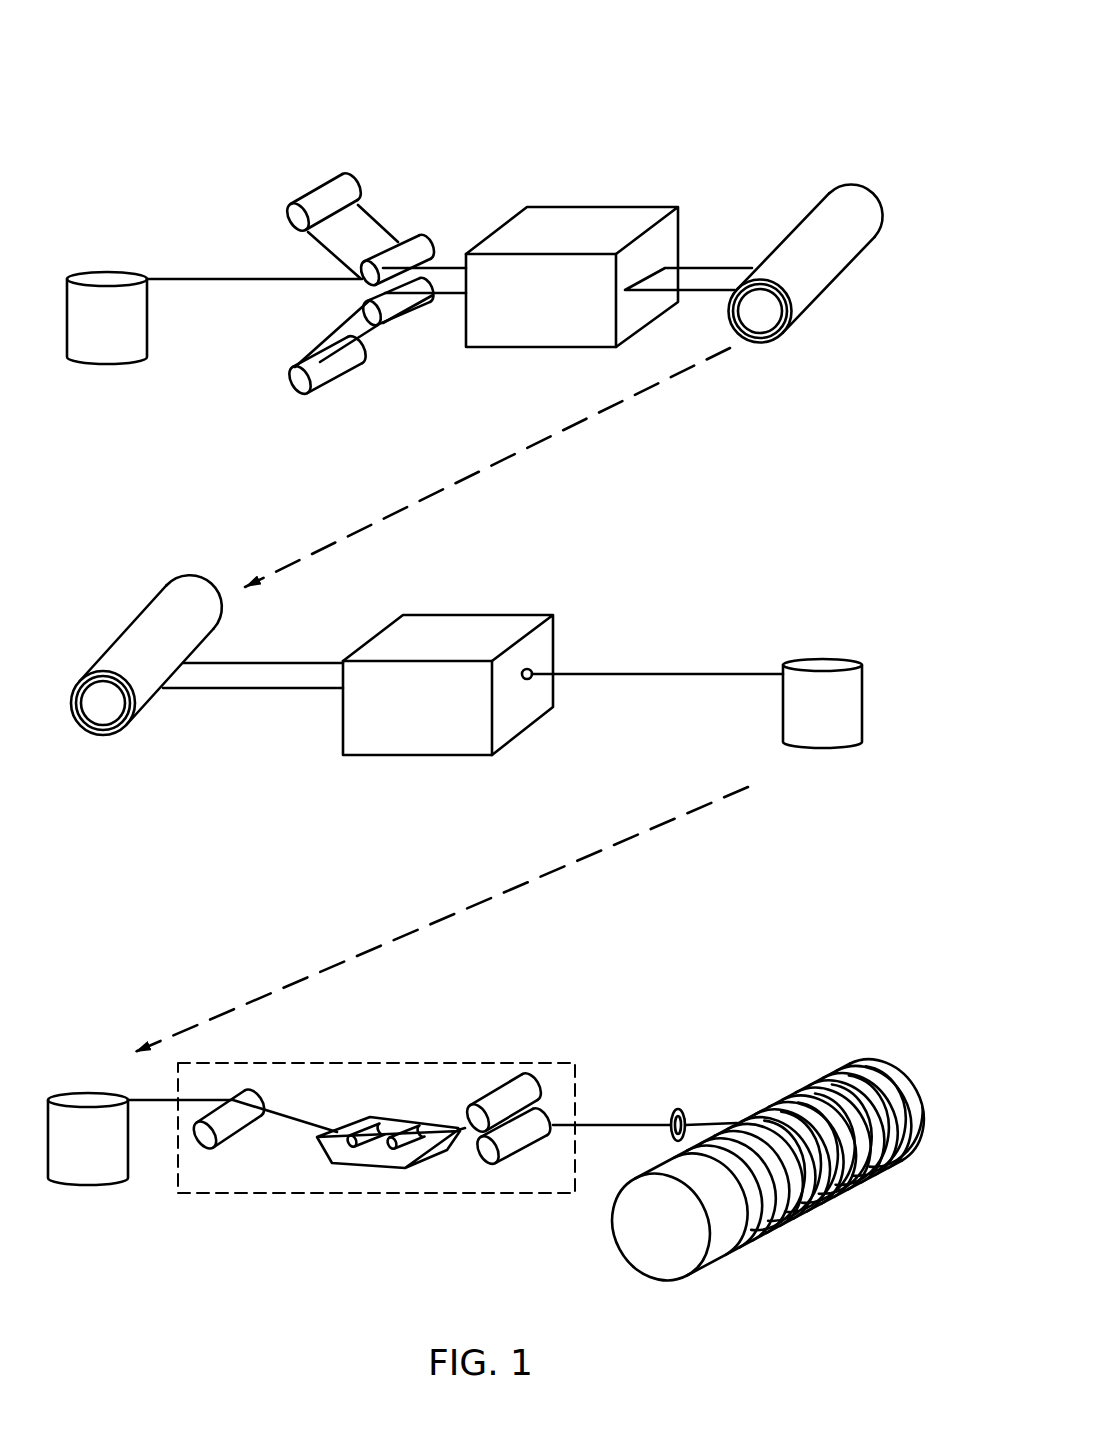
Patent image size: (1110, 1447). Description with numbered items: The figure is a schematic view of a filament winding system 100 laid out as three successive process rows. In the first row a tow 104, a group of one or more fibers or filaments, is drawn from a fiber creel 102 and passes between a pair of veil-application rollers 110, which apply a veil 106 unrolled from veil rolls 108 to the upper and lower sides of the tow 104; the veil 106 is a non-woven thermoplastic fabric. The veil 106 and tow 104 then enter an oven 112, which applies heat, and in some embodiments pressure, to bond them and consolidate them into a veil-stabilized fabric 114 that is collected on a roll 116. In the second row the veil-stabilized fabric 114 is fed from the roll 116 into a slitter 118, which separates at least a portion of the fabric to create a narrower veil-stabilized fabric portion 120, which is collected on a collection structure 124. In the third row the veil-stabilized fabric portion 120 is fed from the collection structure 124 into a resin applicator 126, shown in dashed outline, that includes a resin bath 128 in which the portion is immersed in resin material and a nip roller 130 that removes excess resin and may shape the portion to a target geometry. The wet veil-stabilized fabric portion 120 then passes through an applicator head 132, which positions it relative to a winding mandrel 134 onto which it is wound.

The filament winding system 100 is at (138, 47).
The fiber creel 102 is at (95, 272).
The tow 104 is at (235, 278).
The veil 106 is at (377, 243).
The veil roll 108 is at (312, 192).
The veil-application roller 110 is at (425, 235).
The oven 112 is at (578, 210).
The veil-stabilized fabric 114 is at (712, 268).
The roll 116 is at (838, 190).
The slitter 118 is at (487, 615).
The veil-stabilized fabric portion 120 is at (608, 677).
The collection structure 124 is at (822, 660).
The resin applicator 126 is at (505, 1060).
The resin bath 128 is at (383, 1170).
The nip roller 130 is at (510, 1165).
The applicator head 132 is at (678, 1108).
The winding mandrel 134 is at (650, 1278).